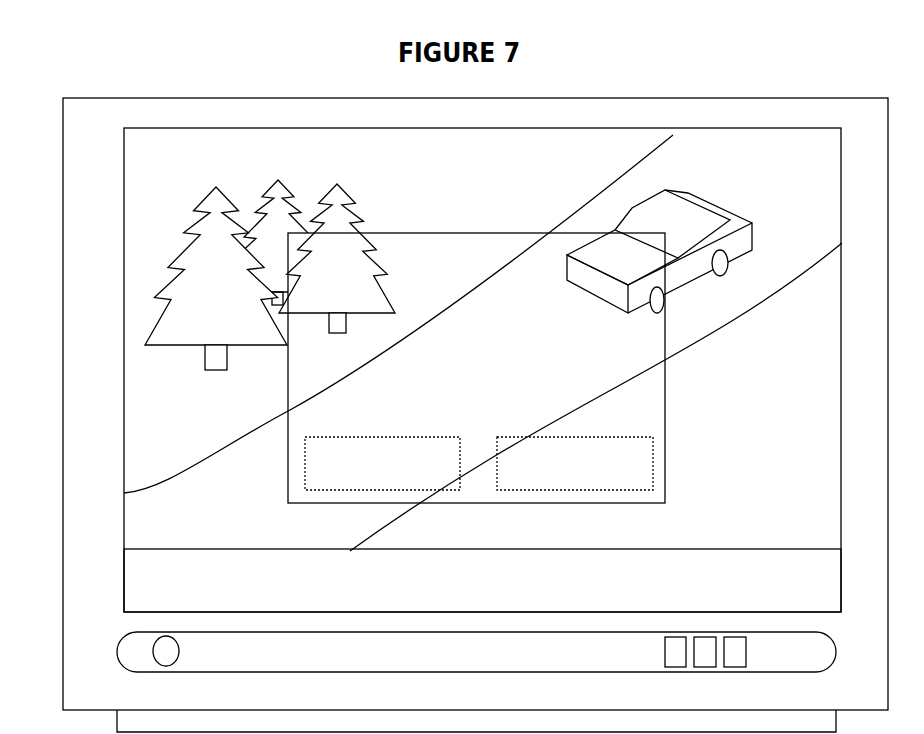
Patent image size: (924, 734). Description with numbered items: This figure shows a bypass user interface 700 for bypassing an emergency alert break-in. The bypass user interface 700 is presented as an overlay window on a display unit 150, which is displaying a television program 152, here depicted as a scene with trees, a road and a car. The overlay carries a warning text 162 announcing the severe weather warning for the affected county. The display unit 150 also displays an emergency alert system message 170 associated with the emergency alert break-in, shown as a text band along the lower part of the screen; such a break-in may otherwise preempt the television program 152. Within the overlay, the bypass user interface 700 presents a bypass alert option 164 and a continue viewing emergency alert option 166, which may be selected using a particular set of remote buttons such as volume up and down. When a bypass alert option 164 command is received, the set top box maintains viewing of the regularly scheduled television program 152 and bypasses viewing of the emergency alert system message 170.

The display unit 150 is at (163, 98).
The television program 152 is at (152, 223).
The severe weather warning text 162 is at (342, 364).
The bypass alert option 164 is at (302, 486).
The continue viewing emergency alert option 166 is at (653, 463).
The emergency alert system message 170 is at (712, 556).
The bypass user interface 700 is at (478, 344).